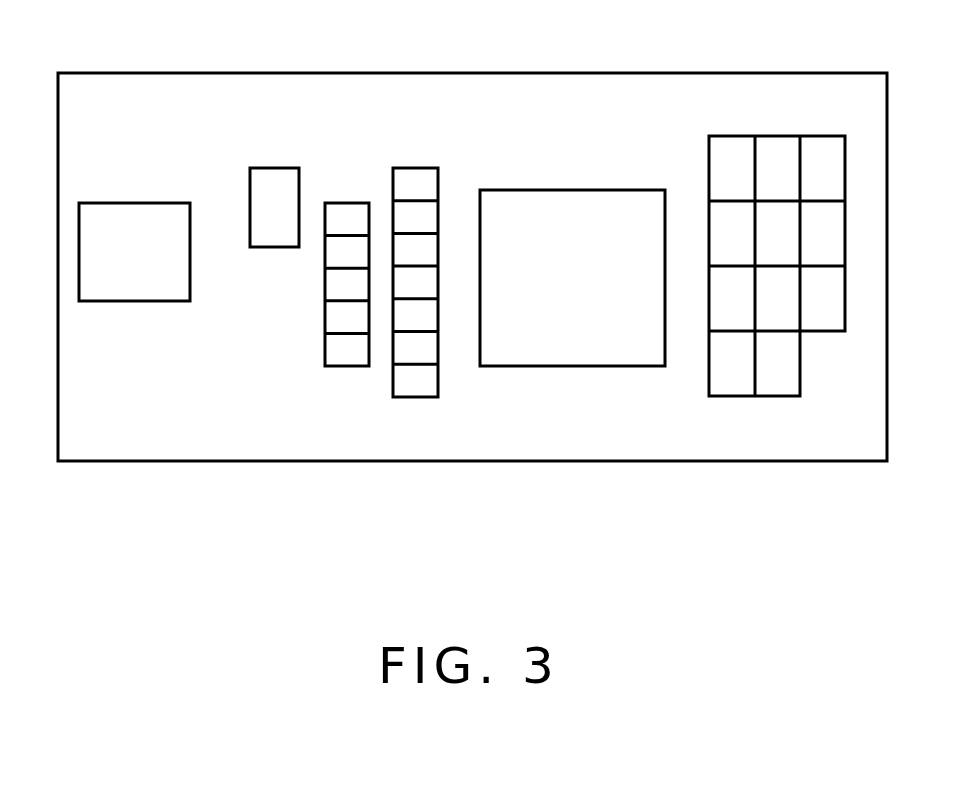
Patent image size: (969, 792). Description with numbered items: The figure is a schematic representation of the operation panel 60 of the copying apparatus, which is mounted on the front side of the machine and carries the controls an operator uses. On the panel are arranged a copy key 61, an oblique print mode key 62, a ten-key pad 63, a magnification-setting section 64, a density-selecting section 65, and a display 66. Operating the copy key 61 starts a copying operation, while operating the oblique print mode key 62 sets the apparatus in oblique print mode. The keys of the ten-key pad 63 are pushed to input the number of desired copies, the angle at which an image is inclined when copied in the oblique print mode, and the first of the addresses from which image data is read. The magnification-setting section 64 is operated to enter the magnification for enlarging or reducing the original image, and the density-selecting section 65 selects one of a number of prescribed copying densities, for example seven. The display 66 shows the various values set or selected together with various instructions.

The operation panel 60 is at (551, 72).
The copy key 61 is at (135, 294).
The oblique print mode key 62 is at (274, 168).
The ten-key pad 63 is at (801, 363).
The magnification-setting section 64 is at (344, 369).
The density-selecting section 65 is at (412, 168).
The display 66 is at (584, 359).